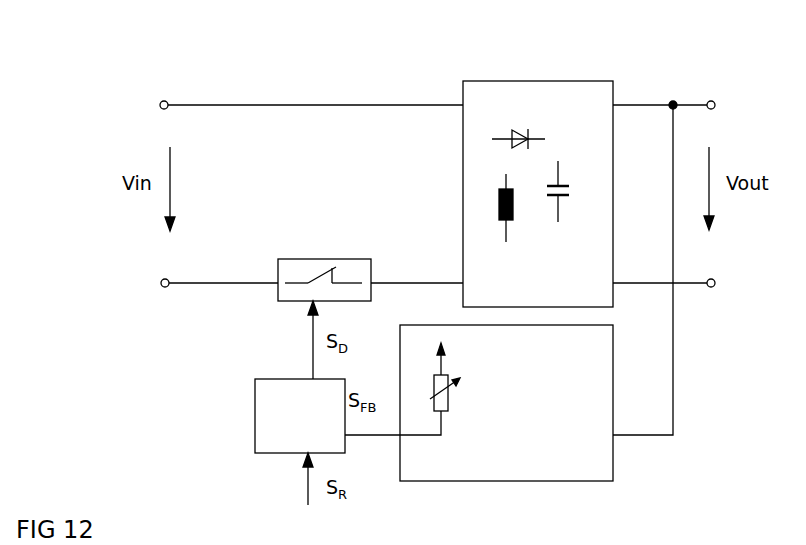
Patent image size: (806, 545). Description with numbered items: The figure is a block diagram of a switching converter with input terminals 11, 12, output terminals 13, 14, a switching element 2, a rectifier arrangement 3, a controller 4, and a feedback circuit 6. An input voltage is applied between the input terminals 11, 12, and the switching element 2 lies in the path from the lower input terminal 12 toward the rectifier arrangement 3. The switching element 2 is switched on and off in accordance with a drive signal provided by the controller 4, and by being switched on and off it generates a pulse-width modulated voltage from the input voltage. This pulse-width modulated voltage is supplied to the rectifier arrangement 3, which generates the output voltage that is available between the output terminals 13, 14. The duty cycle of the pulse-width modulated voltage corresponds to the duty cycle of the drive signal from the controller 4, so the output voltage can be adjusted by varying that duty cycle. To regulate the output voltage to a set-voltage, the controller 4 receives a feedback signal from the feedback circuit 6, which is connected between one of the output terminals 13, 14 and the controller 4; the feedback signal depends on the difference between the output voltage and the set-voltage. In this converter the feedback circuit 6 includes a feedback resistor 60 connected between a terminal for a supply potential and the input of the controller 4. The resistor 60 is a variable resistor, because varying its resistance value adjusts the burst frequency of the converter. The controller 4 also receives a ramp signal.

The input terminal 11 is at (162, 98).
The input terminal 12 is at (161, 290).
The output terminal 13 is at (721, 94).
The output terminal 14 is at (715, 290).
The switching element 2 is at (325, 255).
The rectifier arrangement 3 is at (546, 78).
The controller 4 is at (251, 418).
The feedback circuit 6 is at (506, 434).
The feedback resistor 60 is at (455, 391).